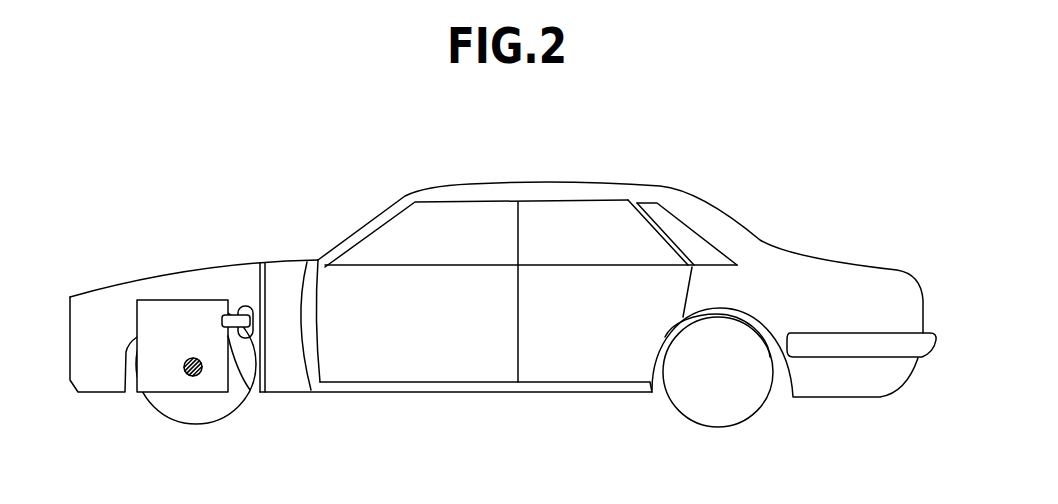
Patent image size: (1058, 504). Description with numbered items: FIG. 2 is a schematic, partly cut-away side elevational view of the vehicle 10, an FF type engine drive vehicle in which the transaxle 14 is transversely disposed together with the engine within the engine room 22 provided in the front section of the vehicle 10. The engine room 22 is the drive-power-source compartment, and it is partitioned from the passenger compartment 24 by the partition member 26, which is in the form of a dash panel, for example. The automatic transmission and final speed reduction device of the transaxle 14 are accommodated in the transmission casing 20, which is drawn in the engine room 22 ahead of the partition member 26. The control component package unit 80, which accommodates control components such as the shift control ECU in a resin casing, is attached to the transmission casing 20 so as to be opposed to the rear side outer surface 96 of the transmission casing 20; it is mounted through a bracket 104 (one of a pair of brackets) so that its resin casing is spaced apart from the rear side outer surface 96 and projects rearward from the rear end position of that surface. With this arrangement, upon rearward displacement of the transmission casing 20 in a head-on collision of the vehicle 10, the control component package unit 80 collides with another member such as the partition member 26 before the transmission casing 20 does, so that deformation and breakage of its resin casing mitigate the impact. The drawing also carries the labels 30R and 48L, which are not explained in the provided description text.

The vehicle 10 is at (654, 146).
The transaxle 14 is at (140, 277).
The transmission casing 20 is at (173, 315).
The engine room 22 is at (113, 325).
The passenger compartment 24 is at (300, 338).
The partition member 26 is at (268, 300).
The right front wheel 30R is at (170, 405).
The left suspension member 48L is at (194, 376).
The control component package unit 80 is at (250, 306).
The rear side outer surface 96 is at (246, 397).
The bracket 104 is at (231, 315).